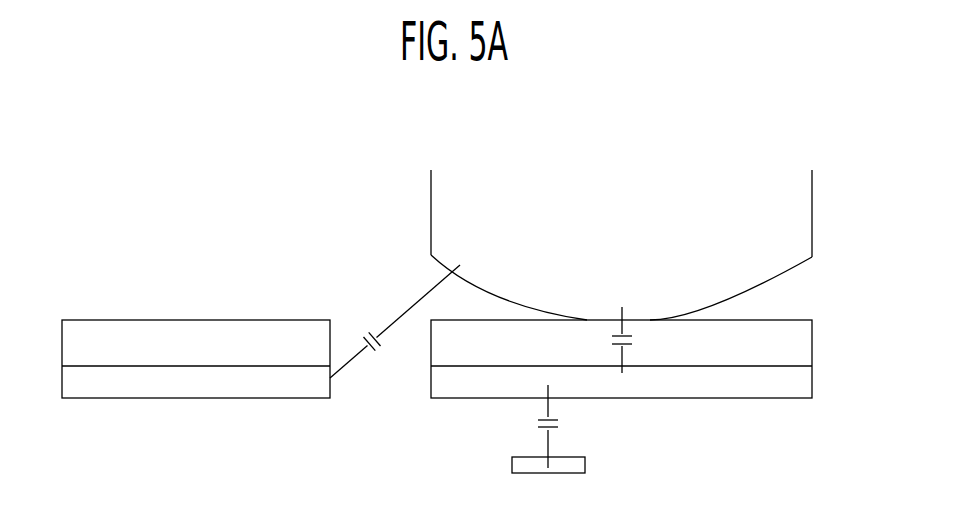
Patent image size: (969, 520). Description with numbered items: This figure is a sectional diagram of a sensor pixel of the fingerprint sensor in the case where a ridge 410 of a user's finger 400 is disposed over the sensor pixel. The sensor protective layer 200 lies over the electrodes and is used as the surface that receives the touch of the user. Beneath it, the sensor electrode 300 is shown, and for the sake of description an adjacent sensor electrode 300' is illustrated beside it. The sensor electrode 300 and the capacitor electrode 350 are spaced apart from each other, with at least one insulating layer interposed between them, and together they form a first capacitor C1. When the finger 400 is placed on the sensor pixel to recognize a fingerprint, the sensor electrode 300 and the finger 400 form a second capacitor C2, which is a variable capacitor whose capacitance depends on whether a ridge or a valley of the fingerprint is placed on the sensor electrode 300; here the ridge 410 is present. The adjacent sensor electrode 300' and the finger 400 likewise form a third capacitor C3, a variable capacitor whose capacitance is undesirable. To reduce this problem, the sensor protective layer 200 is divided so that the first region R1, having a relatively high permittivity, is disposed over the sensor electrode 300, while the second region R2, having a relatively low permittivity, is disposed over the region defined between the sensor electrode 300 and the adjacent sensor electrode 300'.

The sensor protective layer 200 is at (818, 320).
The sensor electrode 300 is at (654, 359).
The adjacent sensor electrode 300' is at (196, 389).
The capacitor electrode 350 is at (511, 462).
The finger 400 is at (800, 219).
The ridge 410 is at (782, 275).
The first region R1 is at (232, 332).
The second region R2 is at (350, 332).
The first capacitor C1 is at (559, 426).
The second capacitor C2 is at (637, 340).
The third capacitor C3 is at (395, 321).